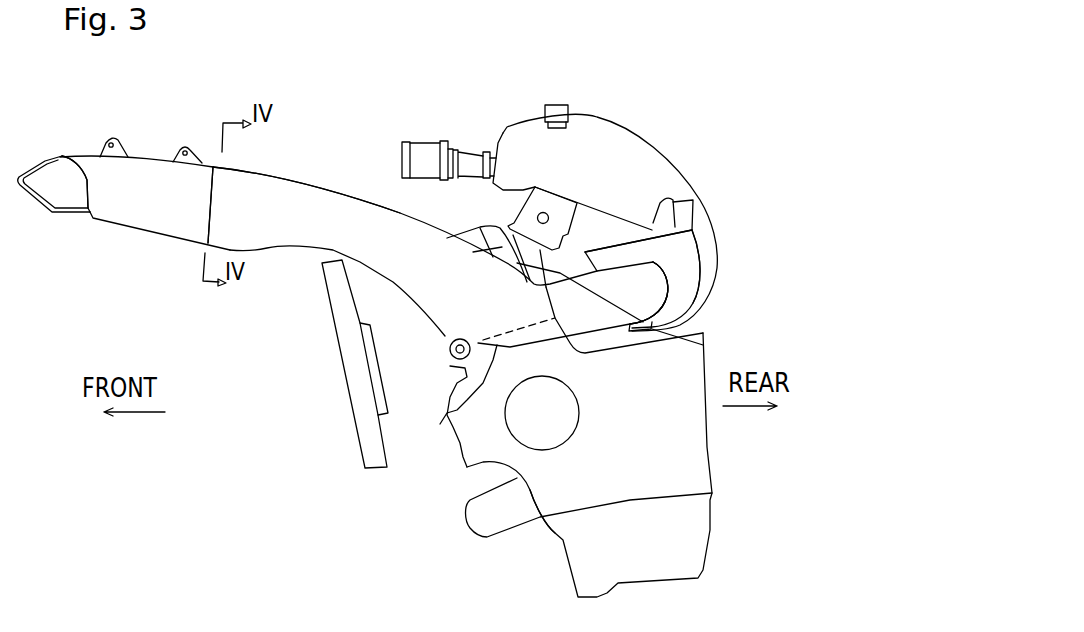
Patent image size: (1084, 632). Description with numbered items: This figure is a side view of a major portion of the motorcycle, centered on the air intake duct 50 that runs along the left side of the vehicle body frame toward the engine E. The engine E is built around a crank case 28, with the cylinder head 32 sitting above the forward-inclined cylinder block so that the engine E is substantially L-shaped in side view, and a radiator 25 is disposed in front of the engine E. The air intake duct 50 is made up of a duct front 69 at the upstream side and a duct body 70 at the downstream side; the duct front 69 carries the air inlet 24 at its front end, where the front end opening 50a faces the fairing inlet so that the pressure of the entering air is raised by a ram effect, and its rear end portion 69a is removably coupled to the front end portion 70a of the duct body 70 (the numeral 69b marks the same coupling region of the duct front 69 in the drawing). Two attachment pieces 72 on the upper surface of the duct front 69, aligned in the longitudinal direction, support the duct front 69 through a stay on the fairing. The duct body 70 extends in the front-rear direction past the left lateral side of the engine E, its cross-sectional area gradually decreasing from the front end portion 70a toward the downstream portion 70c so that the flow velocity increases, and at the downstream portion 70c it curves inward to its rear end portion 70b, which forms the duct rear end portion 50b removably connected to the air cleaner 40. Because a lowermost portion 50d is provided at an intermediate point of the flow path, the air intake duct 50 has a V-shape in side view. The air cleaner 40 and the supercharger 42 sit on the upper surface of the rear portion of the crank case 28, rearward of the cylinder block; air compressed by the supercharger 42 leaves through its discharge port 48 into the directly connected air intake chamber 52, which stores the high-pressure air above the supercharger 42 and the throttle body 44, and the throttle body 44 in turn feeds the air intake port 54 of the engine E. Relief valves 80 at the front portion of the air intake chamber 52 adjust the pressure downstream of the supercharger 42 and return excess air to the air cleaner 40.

The air intake duct 50 is at (257, 348).
The duct front 69 is at (175, 224).
The rear end portion of the duct front 69a is at (82, 157).
The rear end of front tube portion 69b is at (208, 160).
The duct body 70 is at (290, 230).
The front end portion of the duct body 70a is at (235, 177).
The rear end portion of the duct body 70b is at (670, 296).
The downstream portion of the duct body 70c is at (640, 278).
The front end opening of the air intake duct 50a is at (58, 200).
The air inlet 24 is at (58, 200).
The duct rear end portion 50b is at (670, 296).
The lowermost portion of the air intake duct 50d is at (440, 424).
The attachment pieces 72 is at (187, 148).
The relief valves 80 is at (427, 155).
The air intake chamber 52 is at (640, 160).
The throttle body 44 is at (557, 207).
The discharge port of the supercharger 48 is at (685, 203).
The supercharger 42 is at (707, 238).
The air cleaner 40 is at (687, 277).
The cylinder head 32 is at (500, 240).
The air intake port 54 is at (703, 345).
The crank case 28 is at (673, 463).
The radiator 25 is at (377, 458).
The engine E is at (530, 542).